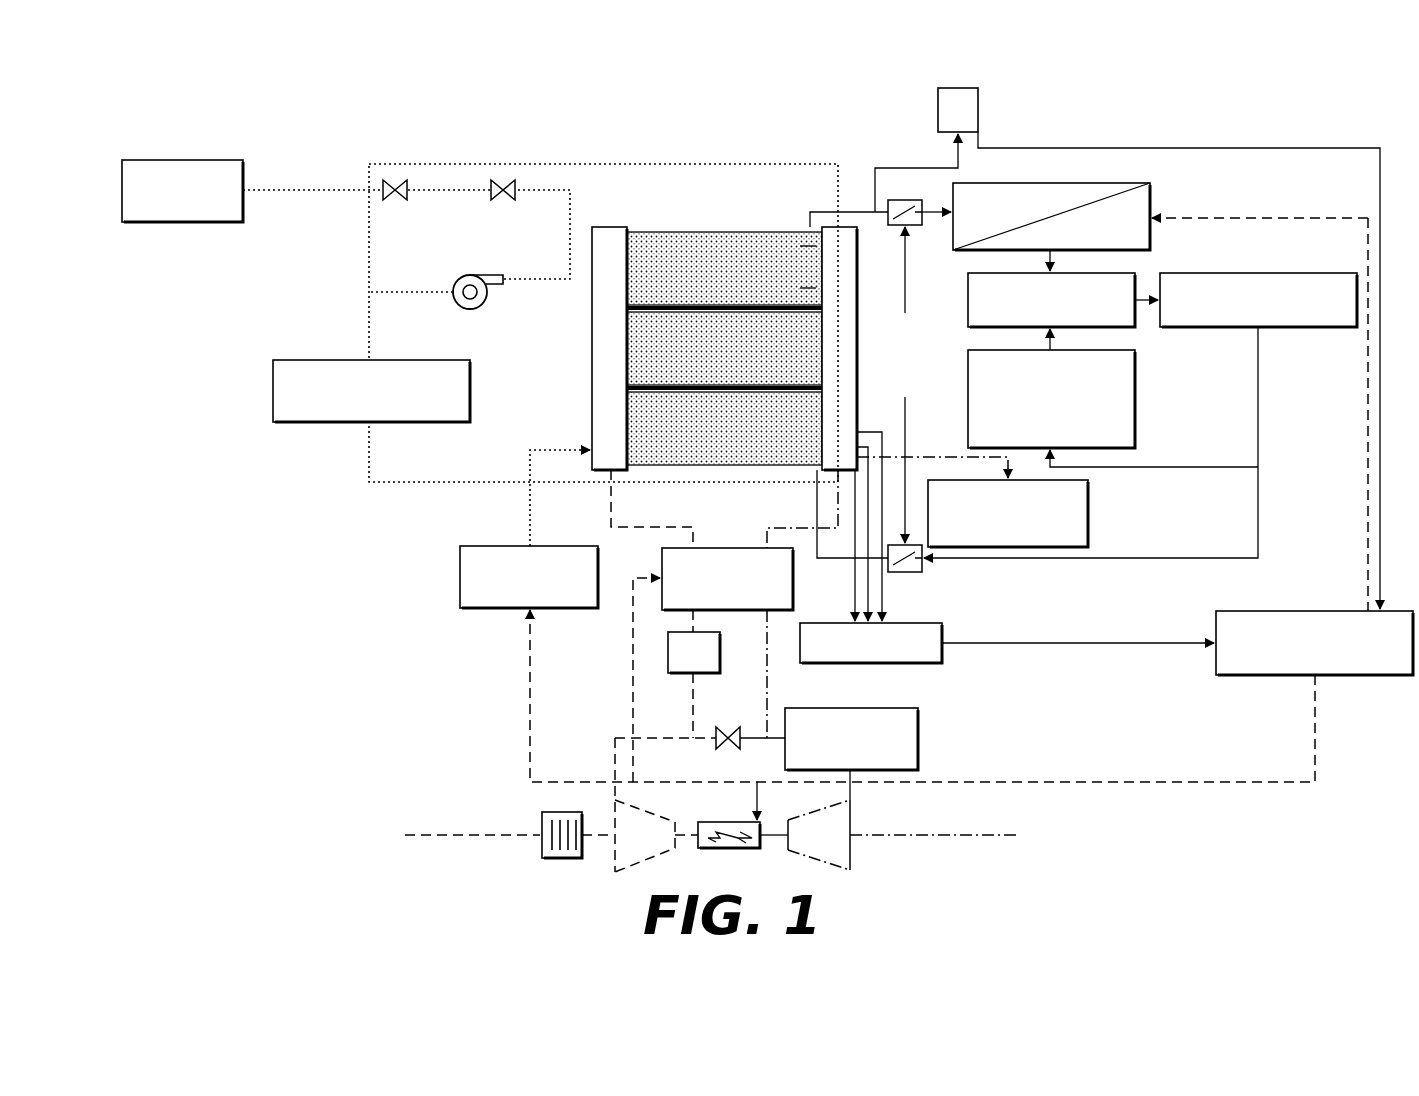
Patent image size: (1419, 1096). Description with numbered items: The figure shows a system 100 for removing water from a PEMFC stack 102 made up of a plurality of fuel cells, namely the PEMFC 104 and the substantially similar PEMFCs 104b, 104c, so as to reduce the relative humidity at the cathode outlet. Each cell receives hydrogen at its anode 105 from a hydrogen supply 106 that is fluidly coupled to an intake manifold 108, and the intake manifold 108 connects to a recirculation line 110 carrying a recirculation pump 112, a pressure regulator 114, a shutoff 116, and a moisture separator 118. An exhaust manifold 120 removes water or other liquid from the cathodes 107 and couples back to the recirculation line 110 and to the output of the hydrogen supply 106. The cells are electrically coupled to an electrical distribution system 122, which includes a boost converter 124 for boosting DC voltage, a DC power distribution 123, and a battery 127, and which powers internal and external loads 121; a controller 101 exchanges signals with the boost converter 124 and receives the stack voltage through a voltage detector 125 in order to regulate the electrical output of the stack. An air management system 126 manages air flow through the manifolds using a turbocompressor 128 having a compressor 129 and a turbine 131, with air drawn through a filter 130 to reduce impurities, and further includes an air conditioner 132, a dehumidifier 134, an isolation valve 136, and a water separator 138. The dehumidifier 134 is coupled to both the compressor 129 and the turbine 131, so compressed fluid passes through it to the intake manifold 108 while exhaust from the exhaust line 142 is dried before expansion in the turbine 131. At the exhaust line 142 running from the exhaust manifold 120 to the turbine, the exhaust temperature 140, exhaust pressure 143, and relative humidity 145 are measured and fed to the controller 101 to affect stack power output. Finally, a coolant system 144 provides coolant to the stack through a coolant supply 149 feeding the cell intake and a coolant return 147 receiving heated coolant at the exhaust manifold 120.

The system 100 is at (532, 64).
The controller 101 is at (1345, 675).
The PEMFC stack 102 is at (815, 104).
The PEMFC 104 is at (688, 268).
The PEMFC 104b is at (723, 345).
The PEMFC 104c is at (723, 430).
The anode 105 is at (812, 246).
The hydrogen supply 106 is at (200, 160).
The cathode 107 is at (812, 288).
The intake manifold 108 is at (592, 343).
The recirculation line 110 is at (369, 438).
The recirculation pump 112 is at (486, 303).
The pressure regulator 114 is at (503, 200).
The shutoff 116 is at (395, 200).
The moisture separator 118 is at (357, 401).
The exhaust manifold 120 is at (857, 396).
The loads 121 is at (1244, 311).
The electrical distribution system 122 is at (1192, 116).
The DC power distribution 123 is at (1036, 311).
The boost converter 124 is at (986, 217).
The voltage detector 125 is at (978, 99).
The air management system 126 is at (309, 770).
The battery 127 is at (1036, 409).
The turbocompressor 128 is at (781, 826).
The compressor 129 is at (626, 846).
The filter 130 is at (542, 845).
The turbine 131 is at (808, 843).
The air conditioner 132 is at (680, 664).
The dehumidifier 134 is at (713, 589).
The isolation valve 136 is at (728, 727).
The water separator 138 is at (837, 749).
The exhaust temperature 140 is at (871, 547).
The exhaust line 142 is at (840, 520).
The exhaust pressure 143 is at (871, 547).
The coolant system 144 is at (453, 616).
The relative humidity 145 is at (817, 654).
The coolant return 147 is at (930, 456).
The coolant supply 149 is at (530, 495).